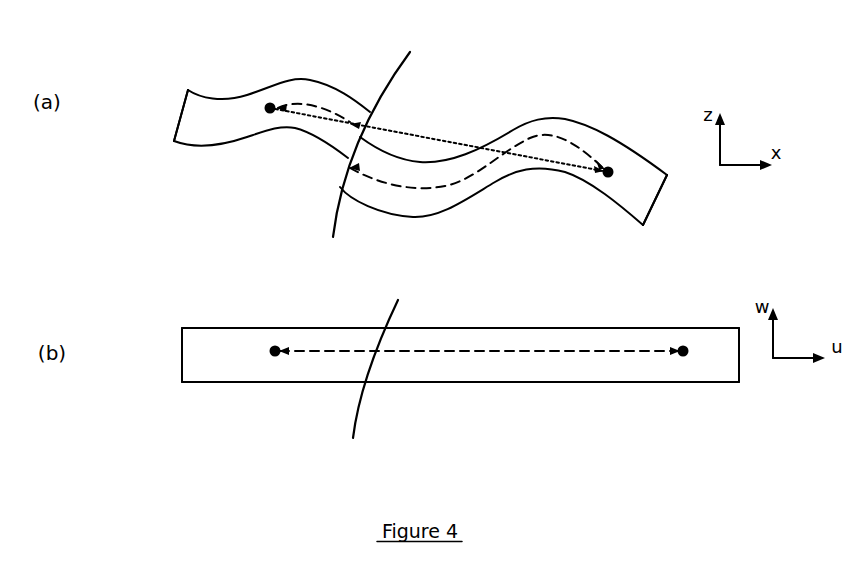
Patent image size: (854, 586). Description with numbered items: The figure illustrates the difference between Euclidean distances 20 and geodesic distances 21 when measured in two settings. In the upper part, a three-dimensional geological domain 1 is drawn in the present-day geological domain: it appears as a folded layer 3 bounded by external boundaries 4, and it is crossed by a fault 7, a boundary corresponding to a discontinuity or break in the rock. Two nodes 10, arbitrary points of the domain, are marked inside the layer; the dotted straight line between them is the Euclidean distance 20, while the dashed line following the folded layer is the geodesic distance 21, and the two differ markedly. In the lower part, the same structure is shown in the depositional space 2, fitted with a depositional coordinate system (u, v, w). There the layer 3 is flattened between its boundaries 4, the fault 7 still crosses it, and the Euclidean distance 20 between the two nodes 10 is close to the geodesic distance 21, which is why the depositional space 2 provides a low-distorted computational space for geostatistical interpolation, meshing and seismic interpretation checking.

The 3D geological domain 1 is at (248, 88).
The depositional space 2 is at (253, 316).
The layer 3 is at (185, 105).
The boundary 4 is at (638, 147).
The fault 7 is at (401, 58).
The node 10 is at (270, 114).
The Euclidean distance 20 is at (430, 137).
The geodesic distance 21 is at (560, 137).